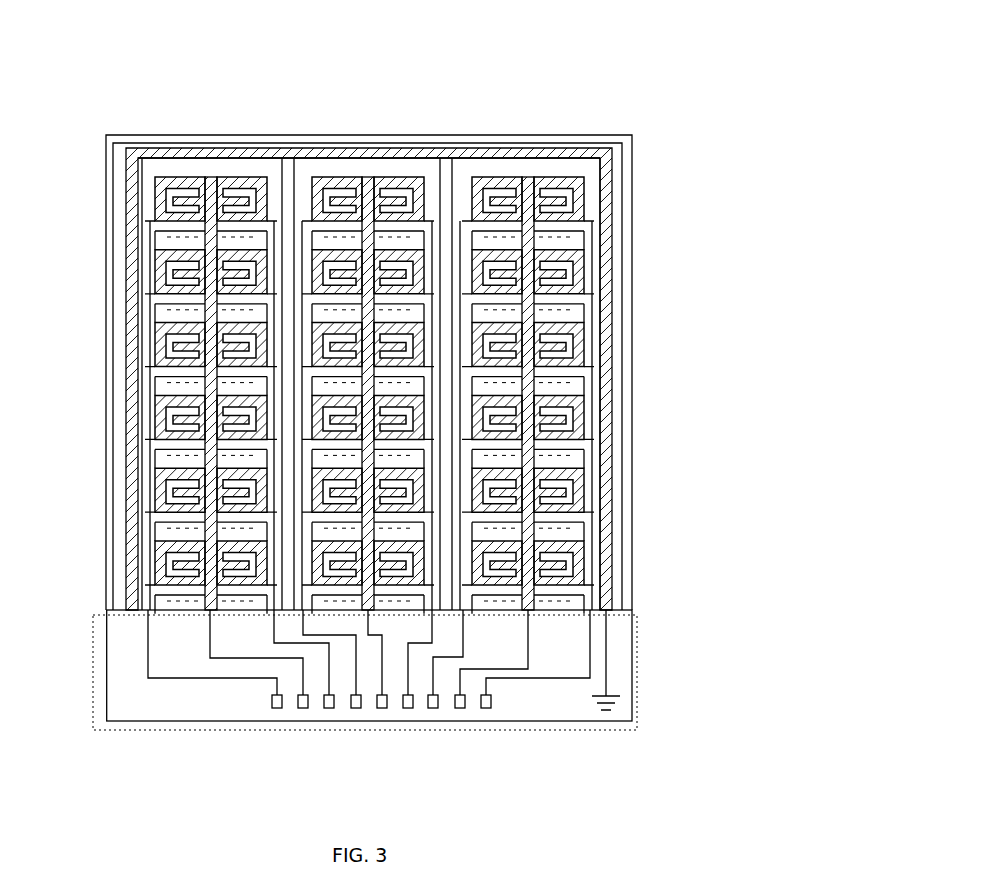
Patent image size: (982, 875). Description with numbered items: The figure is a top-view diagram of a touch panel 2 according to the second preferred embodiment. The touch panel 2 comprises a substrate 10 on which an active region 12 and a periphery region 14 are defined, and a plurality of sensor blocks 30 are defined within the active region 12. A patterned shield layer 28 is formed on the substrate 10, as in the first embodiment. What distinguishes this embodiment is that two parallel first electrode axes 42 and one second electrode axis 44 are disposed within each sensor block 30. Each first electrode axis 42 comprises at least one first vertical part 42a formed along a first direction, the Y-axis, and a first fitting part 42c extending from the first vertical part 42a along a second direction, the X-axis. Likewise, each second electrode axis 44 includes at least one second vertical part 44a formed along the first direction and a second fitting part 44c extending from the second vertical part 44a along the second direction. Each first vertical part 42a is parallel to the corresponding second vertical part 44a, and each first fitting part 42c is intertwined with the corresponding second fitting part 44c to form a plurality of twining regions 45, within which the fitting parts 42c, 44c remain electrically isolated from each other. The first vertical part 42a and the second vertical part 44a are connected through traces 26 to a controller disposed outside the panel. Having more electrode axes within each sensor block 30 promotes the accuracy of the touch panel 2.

The touch panel 2 is at (634, 58).
The substrate 10 is at (110, 139).
The active region 12 is at (334, 145).
The periphery region 14 is at (568, 732).
The traces 26 is at (189, 679).
The patterned shield layer 28 is at (133, 300).
The sensor block 30 is at (217, 159).
The first electrode axis 42 is at (394, 386).
The first vertical part 42a is at (601, 383).
The first fitting part 42c is at (676, 368).
The second electrode axis 44 is at (336, 337).
The second vertical part 44a is at (523, 186).
The second fitting part 44c is at (584, 190).
The twining region 45 is at (176, 240).